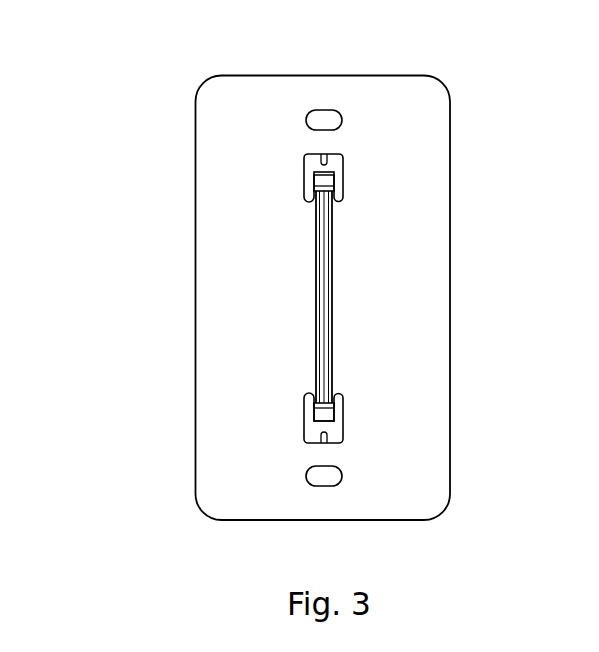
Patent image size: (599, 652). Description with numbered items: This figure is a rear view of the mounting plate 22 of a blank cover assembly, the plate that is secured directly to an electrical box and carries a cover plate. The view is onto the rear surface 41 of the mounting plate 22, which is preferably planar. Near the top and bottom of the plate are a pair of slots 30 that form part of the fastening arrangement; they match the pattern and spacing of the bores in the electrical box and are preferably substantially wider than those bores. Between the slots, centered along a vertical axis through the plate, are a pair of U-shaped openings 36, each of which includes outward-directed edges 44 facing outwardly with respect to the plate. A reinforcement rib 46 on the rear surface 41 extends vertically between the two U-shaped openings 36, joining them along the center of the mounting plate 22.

The mounting plate 22 is at (152, 160).
The slots 30 is at (332, 113).
The U-shaped openings 36 is at (333, 173).
The rear surface 41 is at (370, 307).
The outward-directed edges 44 is at (322, 178).
The reinforcement rib 46 is at (315, 297).